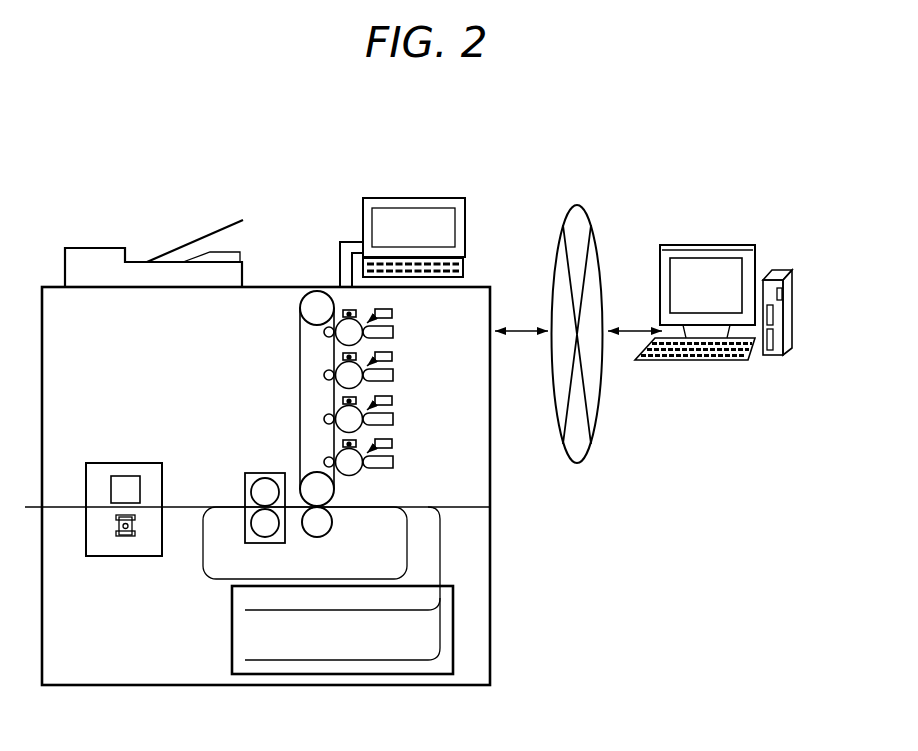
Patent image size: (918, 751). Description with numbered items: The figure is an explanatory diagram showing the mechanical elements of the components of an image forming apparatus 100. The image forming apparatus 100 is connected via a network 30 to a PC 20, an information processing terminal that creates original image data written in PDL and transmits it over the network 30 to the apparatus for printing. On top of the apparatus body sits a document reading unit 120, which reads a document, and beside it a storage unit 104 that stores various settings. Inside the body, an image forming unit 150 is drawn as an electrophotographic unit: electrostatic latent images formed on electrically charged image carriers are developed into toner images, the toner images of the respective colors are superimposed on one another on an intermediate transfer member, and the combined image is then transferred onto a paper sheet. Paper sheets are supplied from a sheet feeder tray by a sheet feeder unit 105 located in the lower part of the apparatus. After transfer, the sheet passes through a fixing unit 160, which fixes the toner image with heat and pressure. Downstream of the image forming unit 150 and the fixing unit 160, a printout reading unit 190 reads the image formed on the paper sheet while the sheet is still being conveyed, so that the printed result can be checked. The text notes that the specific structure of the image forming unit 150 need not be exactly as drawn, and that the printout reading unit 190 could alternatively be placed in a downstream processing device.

The image forming apparatus 100 is at (277, 287).
The document reading unit 120 is at (95, 248).
The storage unit 104 is at (465, 226).
The image forming unit 150 is at (404, 322).
The fixing unit 160 is at (268, 473).
The printout reading unit 190 is at (125, 463).
The sheet feeder unit 105 is at (357, 646).
The network 30 is at (590, 225).
The PC 20 is at (772, 256).